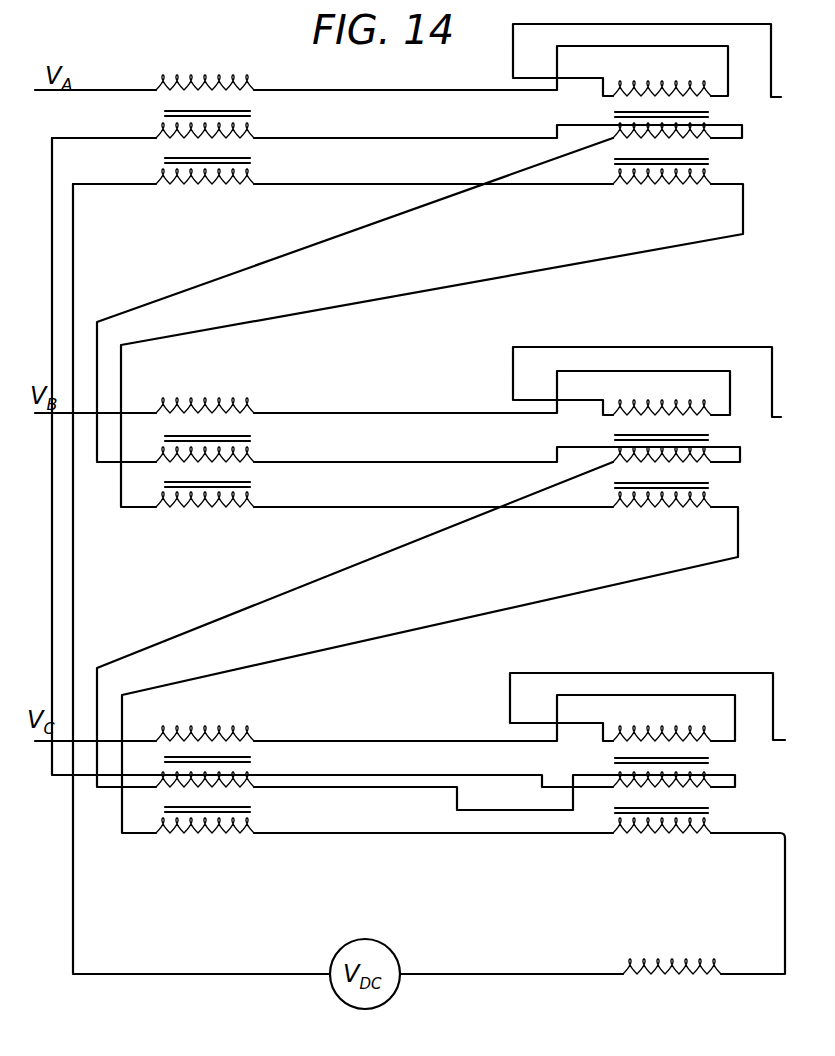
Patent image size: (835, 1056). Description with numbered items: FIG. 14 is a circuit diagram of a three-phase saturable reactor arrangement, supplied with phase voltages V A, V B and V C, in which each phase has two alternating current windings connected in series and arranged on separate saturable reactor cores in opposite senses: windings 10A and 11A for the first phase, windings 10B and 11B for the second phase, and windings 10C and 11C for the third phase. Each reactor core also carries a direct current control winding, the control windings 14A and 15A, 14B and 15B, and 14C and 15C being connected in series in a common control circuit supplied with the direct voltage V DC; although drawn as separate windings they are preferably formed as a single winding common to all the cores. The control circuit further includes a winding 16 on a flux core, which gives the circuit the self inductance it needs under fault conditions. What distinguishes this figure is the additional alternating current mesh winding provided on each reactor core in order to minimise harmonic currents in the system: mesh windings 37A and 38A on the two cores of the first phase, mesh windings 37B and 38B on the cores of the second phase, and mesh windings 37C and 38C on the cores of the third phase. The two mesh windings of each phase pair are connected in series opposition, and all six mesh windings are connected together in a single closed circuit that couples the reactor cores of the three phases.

The winding 10A is at (232, 86).
The alternating current mesh winding 37A is at (243, 133).
The direct current control winding 14A is at (232, 187).
The winding 11A is at (678, 86).
The alternating current mesh winding 38A is at (712, 140).
The direct current control winding 15A is at (667, 192).
The winding 10B is at (223, 410).
The alternating current mesh winding 37B is at (250, 457).
The direct current control winding 14B is at (217, 516).
The winding 11B is at (688, 410).
The alternating current mesh winding 38B is at (713, 465).
The direct current control winding 15B is at (665, 512).
The winding 10C is at (214, 734).
The alternating current mesh winding 37C is at (257, 791).
The direct current control winding 14C is at (223, 842).
The winding 11C is at (685, 735).
The alternating current mesh winding 38C is at (715, 790).
The direct current control winding 15C is at (678, 840).
The winding 16 is at (672, 965).